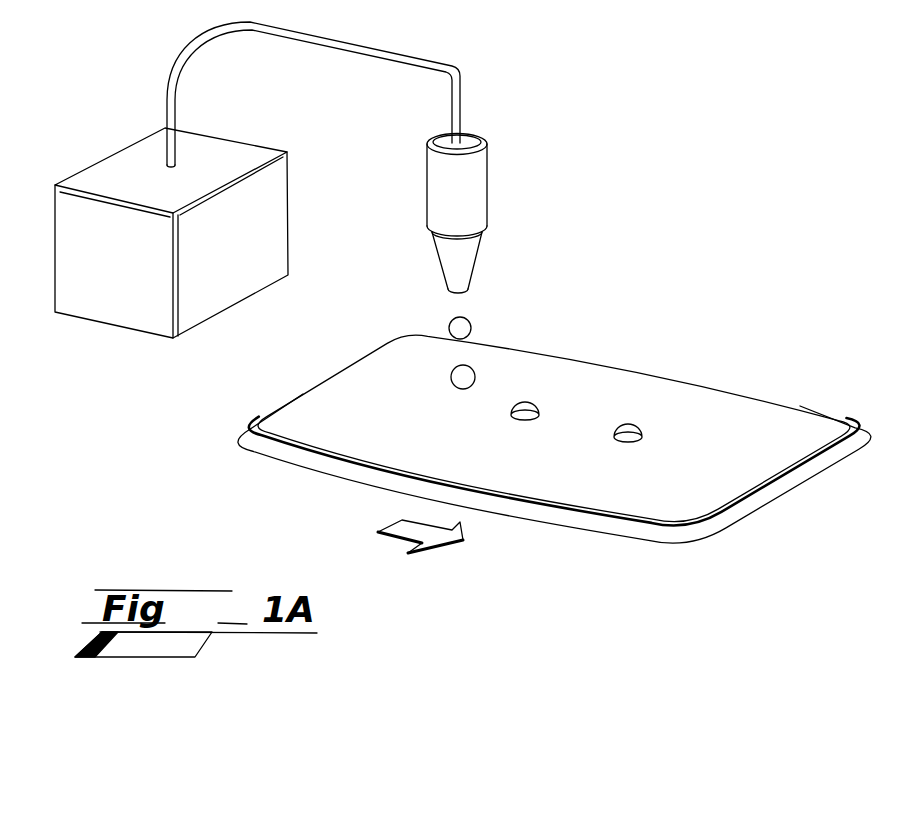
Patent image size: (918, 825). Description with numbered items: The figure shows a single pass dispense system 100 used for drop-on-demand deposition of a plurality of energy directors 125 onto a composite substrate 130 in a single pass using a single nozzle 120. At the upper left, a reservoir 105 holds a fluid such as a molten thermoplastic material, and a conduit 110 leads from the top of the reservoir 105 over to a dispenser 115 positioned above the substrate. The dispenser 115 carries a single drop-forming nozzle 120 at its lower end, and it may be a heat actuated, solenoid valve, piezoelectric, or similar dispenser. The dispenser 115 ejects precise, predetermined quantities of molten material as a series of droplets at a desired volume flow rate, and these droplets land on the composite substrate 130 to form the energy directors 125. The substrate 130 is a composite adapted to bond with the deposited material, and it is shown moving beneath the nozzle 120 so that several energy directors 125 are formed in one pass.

The single pass dispense system 100 is at (824, 144).
The reservoir 105 is at (135, 163).
The conduit 110 is at (412, 55).
The dispenser 115 is at (487, 197).
The nozzle 120 is at (438, 262).
The energy directors 125 is at (528, 400).
The composite substrate 130 is at (348, 397).